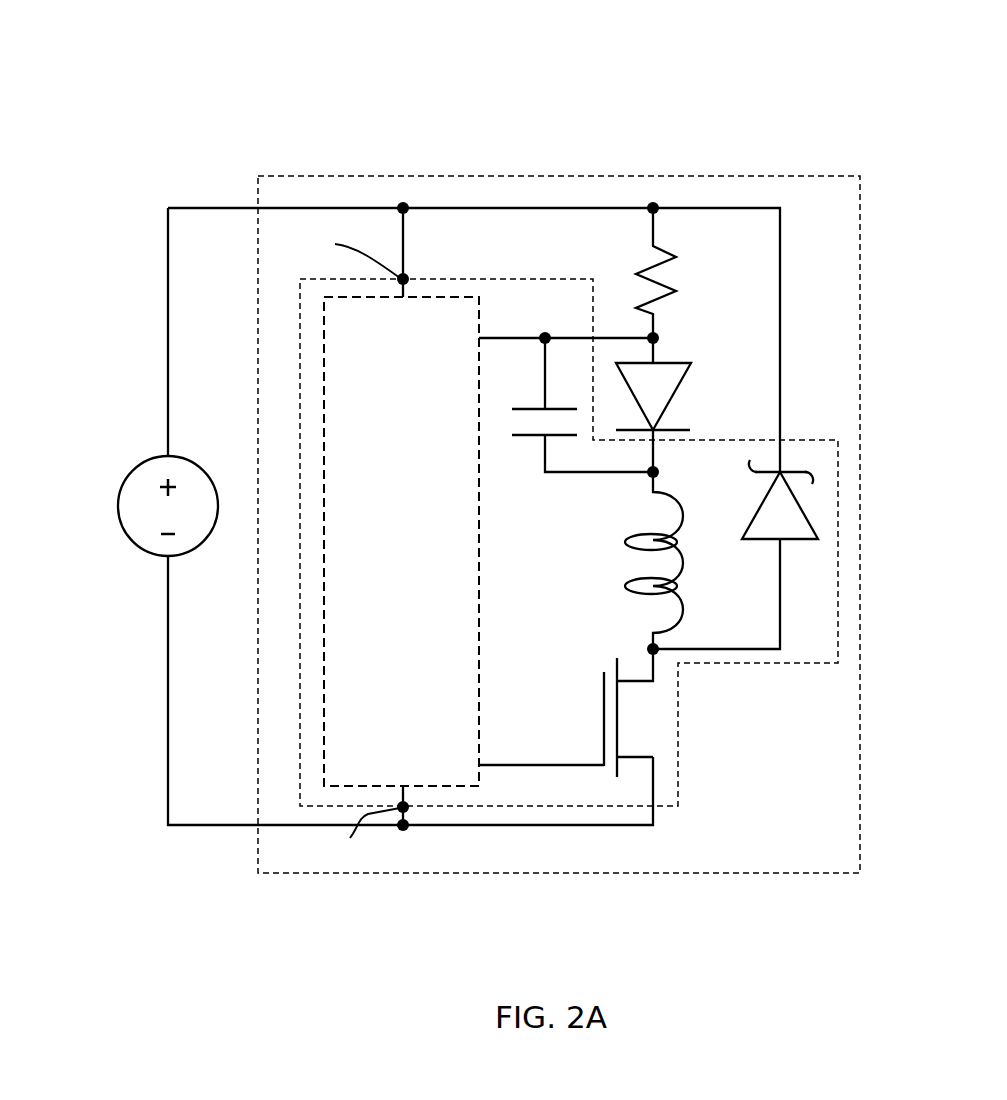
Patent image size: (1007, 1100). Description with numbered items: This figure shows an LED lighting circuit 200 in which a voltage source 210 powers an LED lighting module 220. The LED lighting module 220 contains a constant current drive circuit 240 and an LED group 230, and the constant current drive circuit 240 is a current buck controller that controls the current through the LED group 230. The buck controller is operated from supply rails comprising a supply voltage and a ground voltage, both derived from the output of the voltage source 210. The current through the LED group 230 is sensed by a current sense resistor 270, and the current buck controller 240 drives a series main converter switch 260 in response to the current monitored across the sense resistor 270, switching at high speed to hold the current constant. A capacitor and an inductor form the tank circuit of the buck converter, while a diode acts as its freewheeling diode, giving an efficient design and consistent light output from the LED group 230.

The LED lighting circuit 200 is at (727, 96).
The voltage source 210 is at (140, 560).
The LED lighting module 220 is at (505, 885).
The LED group 230 is at (678, 398).
The constant current drive circuit 240 is at (526, 268).
The series main converter switch 260 is at (630, 714).
The current sense resistor 270 is at (676, 278).